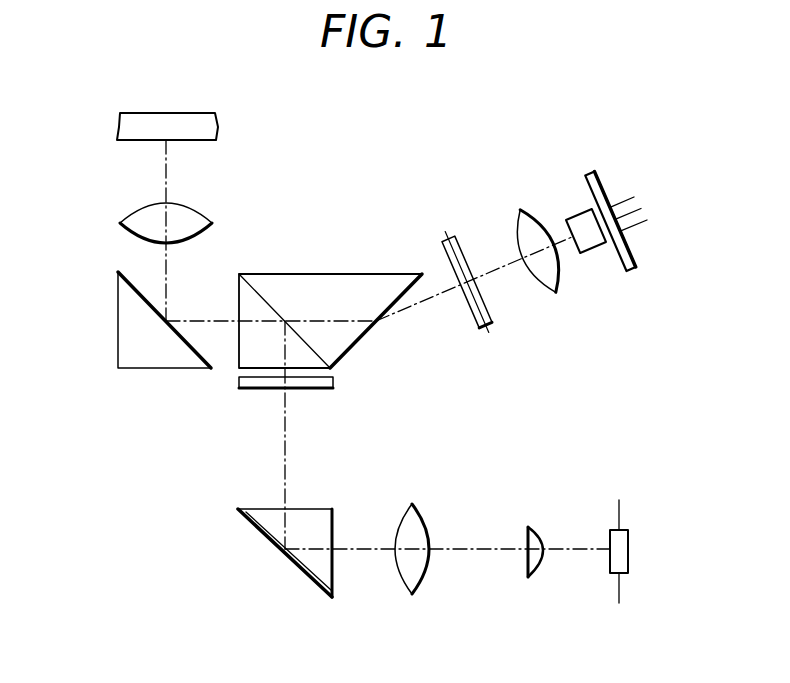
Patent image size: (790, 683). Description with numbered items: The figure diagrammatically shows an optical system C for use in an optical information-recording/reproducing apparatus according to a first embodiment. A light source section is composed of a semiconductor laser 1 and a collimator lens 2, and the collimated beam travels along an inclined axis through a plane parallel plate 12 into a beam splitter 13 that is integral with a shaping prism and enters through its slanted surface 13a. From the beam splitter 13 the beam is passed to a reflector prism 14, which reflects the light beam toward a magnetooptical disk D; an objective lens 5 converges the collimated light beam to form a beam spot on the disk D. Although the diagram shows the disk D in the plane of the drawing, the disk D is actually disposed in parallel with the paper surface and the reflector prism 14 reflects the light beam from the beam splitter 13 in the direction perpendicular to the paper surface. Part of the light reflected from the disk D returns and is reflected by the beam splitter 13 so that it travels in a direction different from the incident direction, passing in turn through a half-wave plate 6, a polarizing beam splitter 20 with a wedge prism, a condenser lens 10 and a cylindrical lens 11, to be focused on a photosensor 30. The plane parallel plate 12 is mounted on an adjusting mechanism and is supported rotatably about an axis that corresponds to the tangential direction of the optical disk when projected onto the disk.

The semiconductor laser 1 is at (588, 228).
The collimator lens 2 is at (522, 215).
The objective lens 5 is at (122, 221).
The half-wave plate 6 is at (333, 381).
The condenser lens 10 is at (415, 530).
The cylindrical lens 11 is at (536, 548).
The plane parallel plate 12 is at (451, 274).
The beam splitter 13 is at (330, 282).
The slanted surface of prism 13a is at (420, 288).
The reflector prism 14 is at (128, 337).
The polarizing beam splitter 20 is at (313, 525).
The photosensor 30 is at (622, 553).
The optical system C is at (333, 181).
The magnetooptical disk D is at (135, 125).